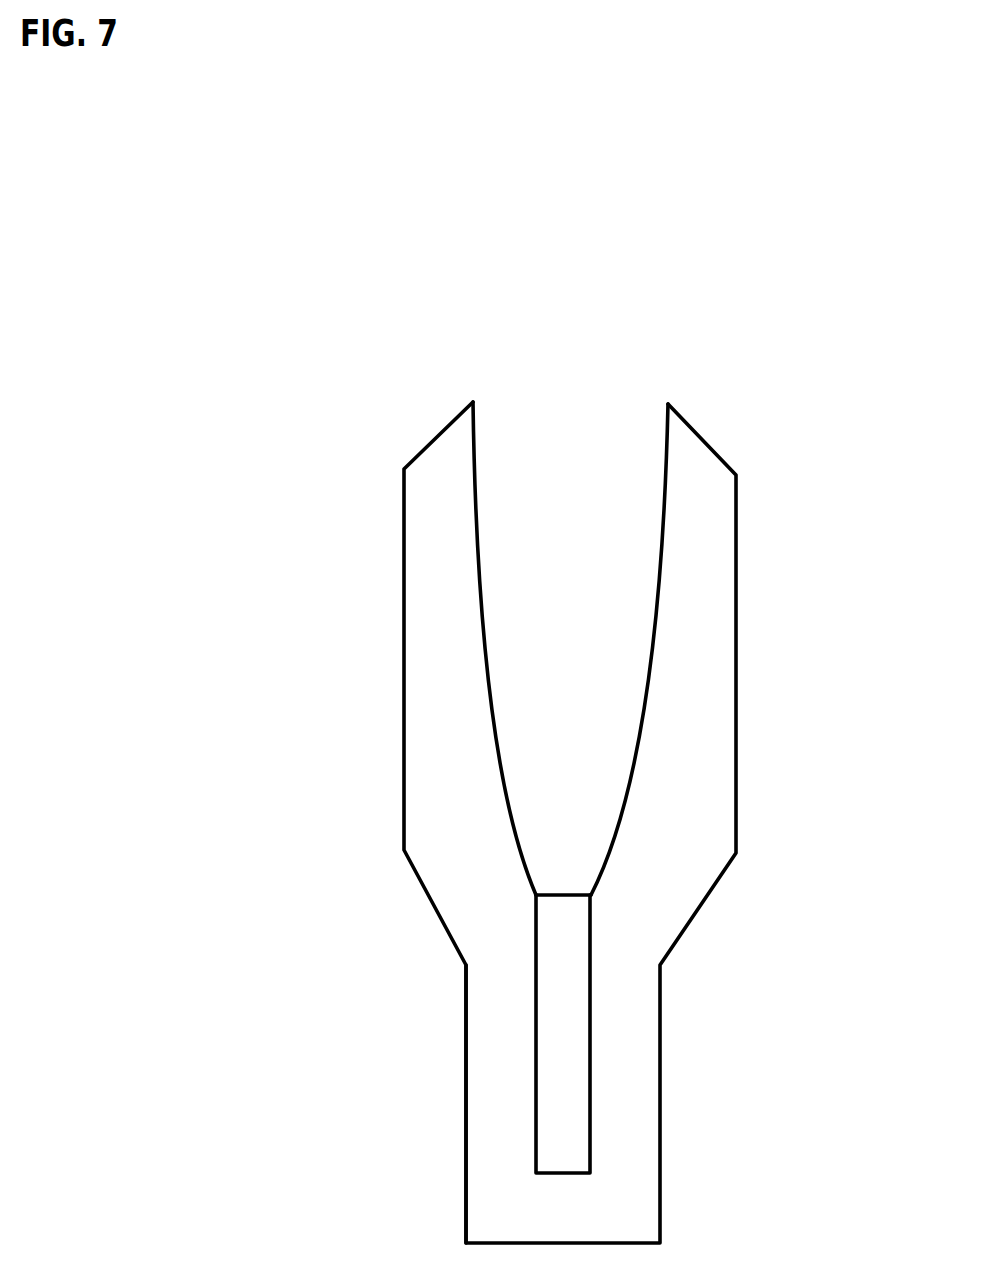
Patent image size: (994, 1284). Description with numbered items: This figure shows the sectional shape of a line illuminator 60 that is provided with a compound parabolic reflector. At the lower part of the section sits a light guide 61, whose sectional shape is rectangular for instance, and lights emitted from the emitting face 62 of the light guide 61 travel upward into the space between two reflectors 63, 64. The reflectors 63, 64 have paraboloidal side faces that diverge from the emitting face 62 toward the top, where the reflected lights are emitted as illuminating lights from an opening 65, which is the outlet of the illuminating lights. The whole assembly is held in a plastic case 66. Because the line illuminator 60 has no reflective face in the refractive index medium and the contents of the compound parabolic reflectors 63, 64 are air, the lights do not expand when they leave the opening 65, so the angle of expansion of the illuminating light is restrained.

The line illuminator 60 is at (768, 547).
The light guide 61 is at (570, 1035).
The emitting face 62 is at (563, 892).
The reflector 63 is at (650, 657).
The reflector 64 is at (486, 652).
The opening 65 is at (570, 405).
The plastic case 66 is at (465, 1032).